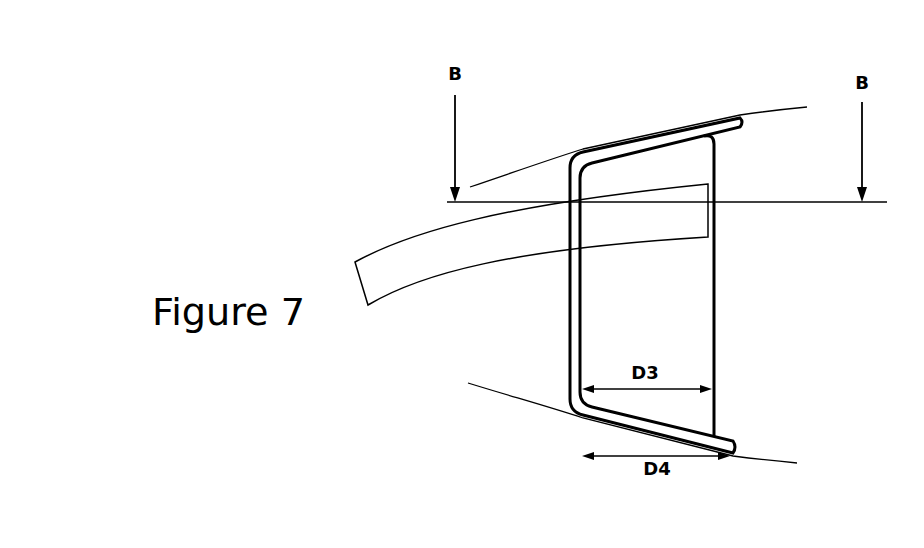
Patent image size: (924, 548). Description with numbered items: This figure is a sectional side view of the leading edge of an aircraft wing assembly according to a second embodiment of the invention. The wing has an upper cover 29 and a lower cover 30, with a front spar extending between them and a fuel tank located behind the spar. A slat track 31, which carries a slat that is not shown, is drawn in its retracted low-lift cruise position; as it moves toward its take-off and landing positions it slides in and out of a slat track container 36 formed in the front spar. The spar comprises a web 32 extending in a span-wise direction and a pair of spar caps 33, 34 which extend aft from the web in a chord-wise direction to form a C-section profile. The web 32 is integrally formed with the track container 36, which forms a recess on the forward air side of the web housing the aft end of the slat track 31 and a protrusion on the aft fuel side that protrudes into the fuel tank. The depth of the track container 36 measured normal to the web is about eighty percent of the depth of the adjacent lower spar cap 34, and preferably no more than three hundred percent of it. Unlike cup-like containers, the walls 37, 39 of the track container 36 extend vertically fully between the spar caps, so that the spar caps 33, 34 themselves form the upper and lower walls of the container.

The upper cover 29 is at (775, 108).
The lower cover 30 is at (772, 460).
The slat track 31 is at (517, 233).
The web 32 is at (570, 320).
The spar cap 33 is at (630, 140).
The spar cap 34 is at (713, 428).
The track container 36 is at (755, 295).
The wall 37 is at (690, 373).
The wall 39 is at (718, 160).